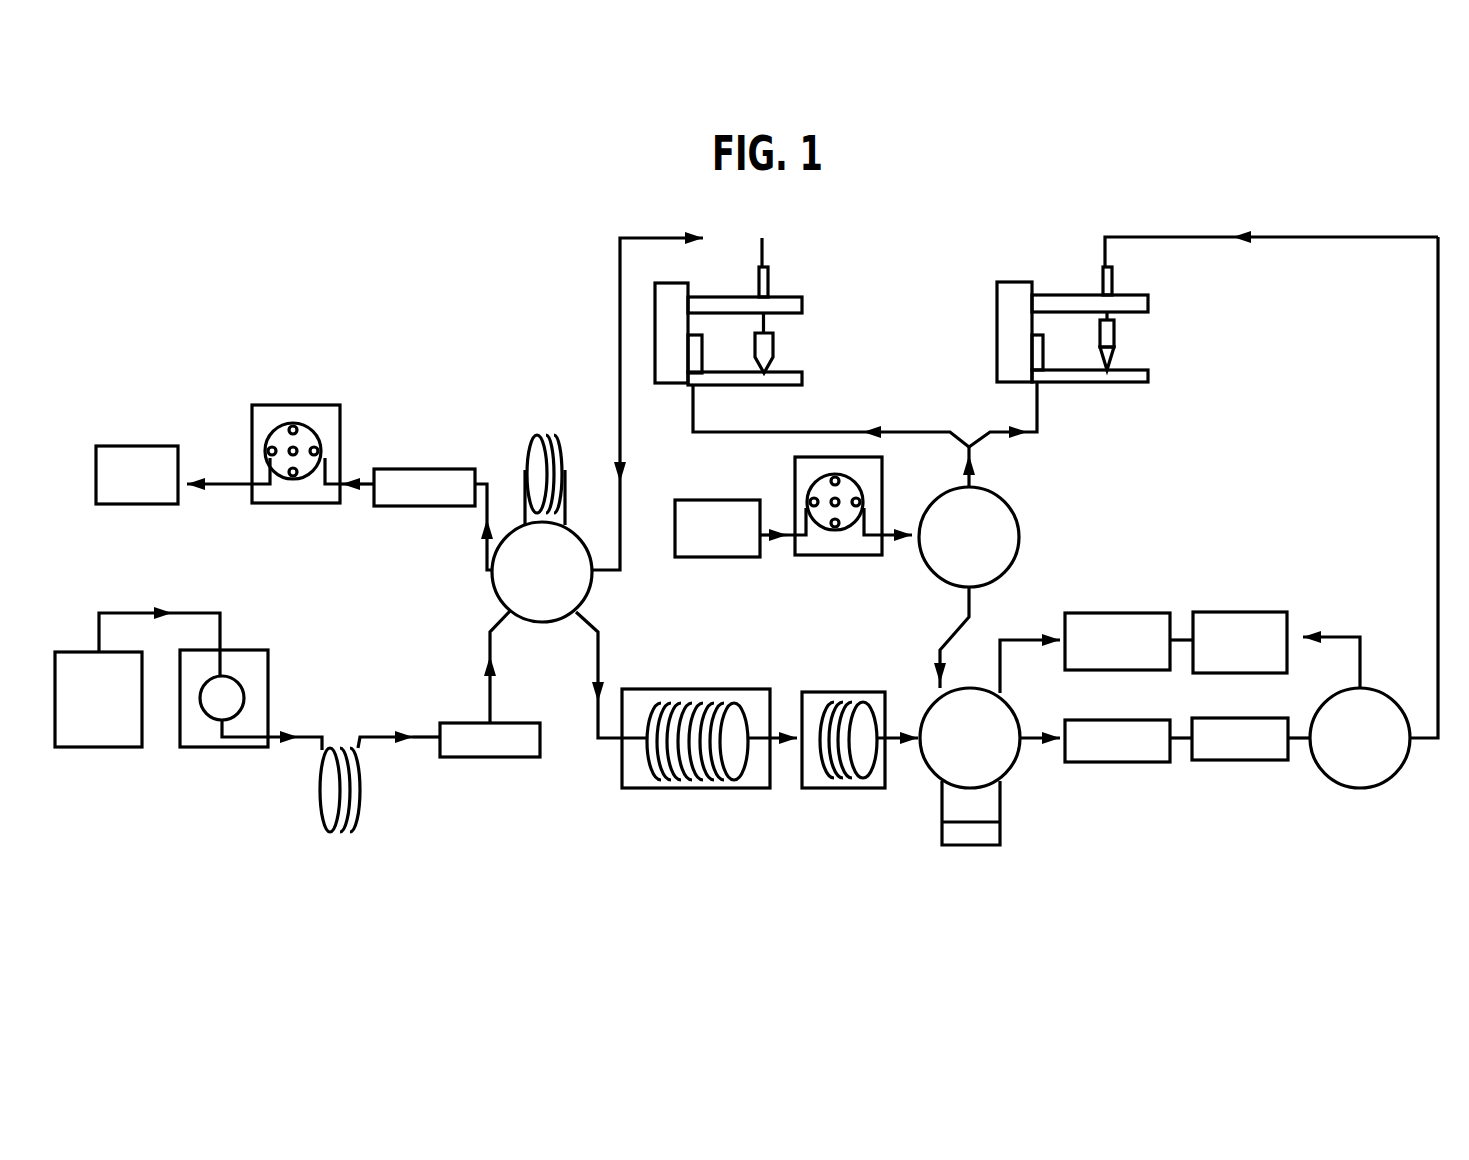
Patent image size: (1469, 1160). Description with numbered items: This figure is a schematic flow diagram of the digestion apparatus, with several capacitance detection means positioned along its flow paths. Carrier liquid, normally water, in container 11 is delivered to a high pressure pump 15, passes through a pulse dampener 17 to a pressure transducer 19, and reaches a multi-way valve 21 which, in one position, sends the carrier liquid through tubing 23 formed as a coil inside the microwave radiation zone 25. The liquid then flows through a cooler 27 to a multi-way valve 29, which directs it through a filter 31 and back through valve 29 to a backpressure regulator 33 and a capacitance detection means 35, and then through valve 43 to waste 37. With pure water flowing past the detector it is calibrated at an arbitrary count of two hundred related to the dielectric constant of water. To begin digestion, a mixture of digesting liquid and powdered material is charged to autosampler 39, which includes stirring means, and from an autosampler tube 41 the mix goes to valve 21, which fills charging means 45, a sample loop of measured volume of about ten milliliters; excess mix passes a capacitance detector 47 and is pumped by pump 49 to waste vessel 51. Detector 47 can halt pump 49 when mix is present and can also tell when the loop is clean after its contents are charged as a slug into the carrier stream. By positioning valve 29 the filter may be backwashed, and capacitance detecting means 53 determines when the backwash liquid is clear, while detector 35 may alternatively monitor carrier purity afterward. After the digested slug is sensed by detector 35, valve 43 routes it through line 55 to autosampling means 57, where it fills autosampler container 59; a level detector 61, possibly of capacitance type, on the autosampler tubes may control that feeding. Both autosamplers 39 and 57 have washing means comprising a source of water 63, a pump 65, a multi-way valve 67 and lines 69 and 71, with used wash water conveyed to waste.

The container 11 is at (77, 652).
The high pressure pump 15 is at (212, 748).
The pulse dampener 17 is at (362, 818).
The pressure transducer 19 is at (450, 758).
The multi-way valve 21 is at (590, 590).
The tubing 23 is at (622, 750).
The microwave radiation zone 25 is at (645, 690).
The cooler 27 is at (865, 692).
The multi-way valve 29 is at (1020, 752).
The filter 31 is at (982, 846).
The backpressure regulator 33 is at (1127, 763).
The capacitance detection means 35 is at (1243, 761).
The waste 37 is at (1260, 612).
The autosampler 39 is at (780, 297).
The autosampler tube 41 is at (773, 357).
The valve 43 is at (1405, 763).
The charging means 45 is at (525, 463).
The capacitance detector 47 is at (373, 493).
The pump 49 is at (293, 405).
The waste vessel 51 is at (128, 446).
The capacitance detecting means 53 is at (1075, 613).
The line 55 is at (1160, 236).
The autosampling means 57 is at (997, 325).
The autosampler container 59 is at (1114, 352).
The level detector 61 is at (1114, 335).
The source of water 63 is at (742, 500).
The pump 65 is at (862, 555).
The multi-way valve 67 is at (1020, 527).
The line 69 is at (912, 432).
The line 71 is at (1037, 430).